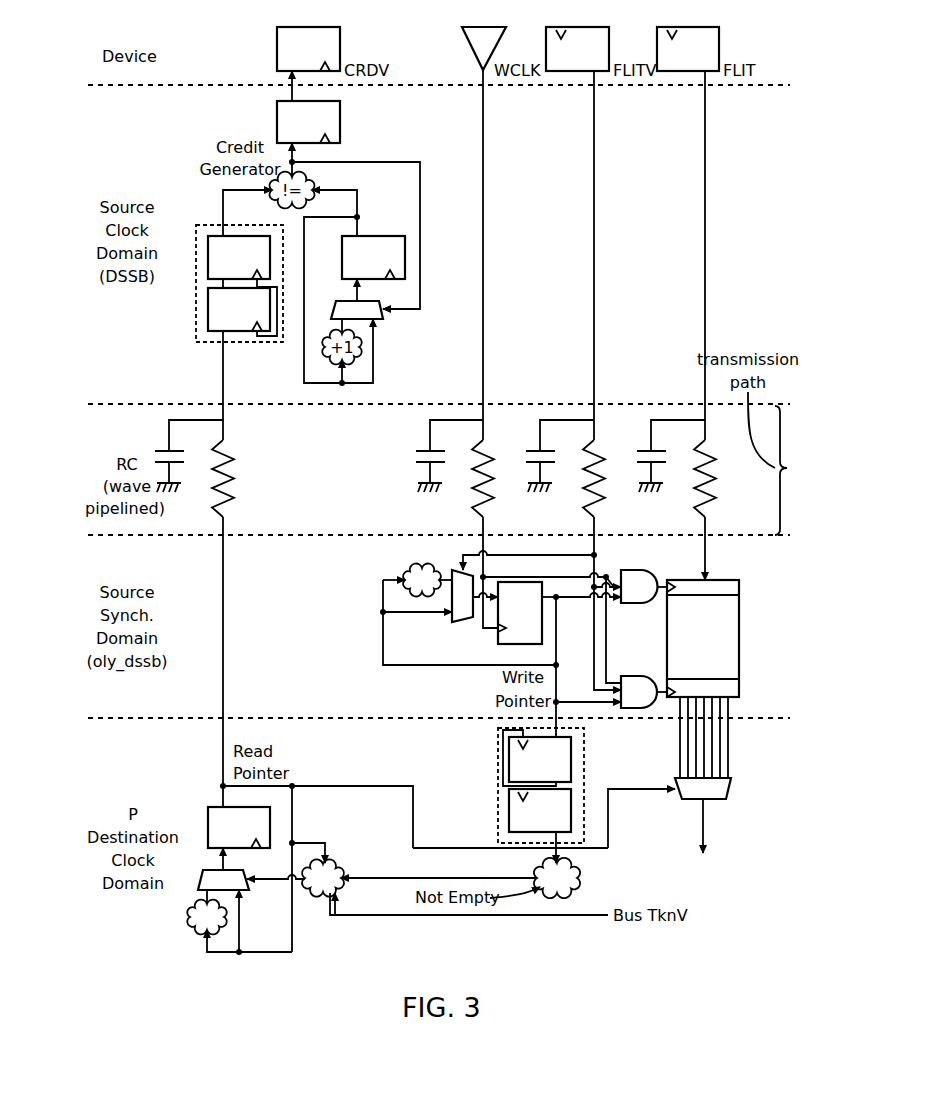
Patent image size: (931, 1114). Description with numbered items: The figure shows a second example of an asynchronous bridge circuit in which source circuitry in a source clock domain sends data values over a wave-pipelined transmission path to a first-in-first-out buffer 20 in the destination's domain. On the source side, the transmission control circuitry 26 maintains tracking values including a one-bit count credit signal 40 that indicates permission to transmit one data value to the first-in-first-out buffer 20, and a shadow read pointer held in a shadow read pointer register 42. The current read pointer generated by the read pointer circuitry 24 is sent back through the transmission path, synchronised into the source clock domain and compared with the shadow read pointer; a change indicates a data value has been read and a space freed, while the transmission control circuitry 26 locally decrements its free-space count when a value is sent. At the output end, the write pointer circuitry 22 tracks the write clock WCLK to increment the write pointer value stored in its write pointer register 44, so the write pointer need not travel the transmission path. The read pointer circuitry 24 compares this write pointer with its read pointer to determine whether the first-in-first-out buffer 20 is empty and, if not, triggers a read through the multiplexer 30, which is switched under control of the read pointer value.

The first-in-first-out buffer 20 is at (739, 582).
The write pointer circuitry 22 is at (488, 644).
The read pointer circuitry 24 is at (205, 770).
The transmission control circuitry 26 is at (173, 308).
The multiplexer 30 is at (731, 786).
The count credit signal 40 is at (340, 125).
The shadow read pointer register 42 is at (375, 235).
The write pointer register 44 is at (498, 644).